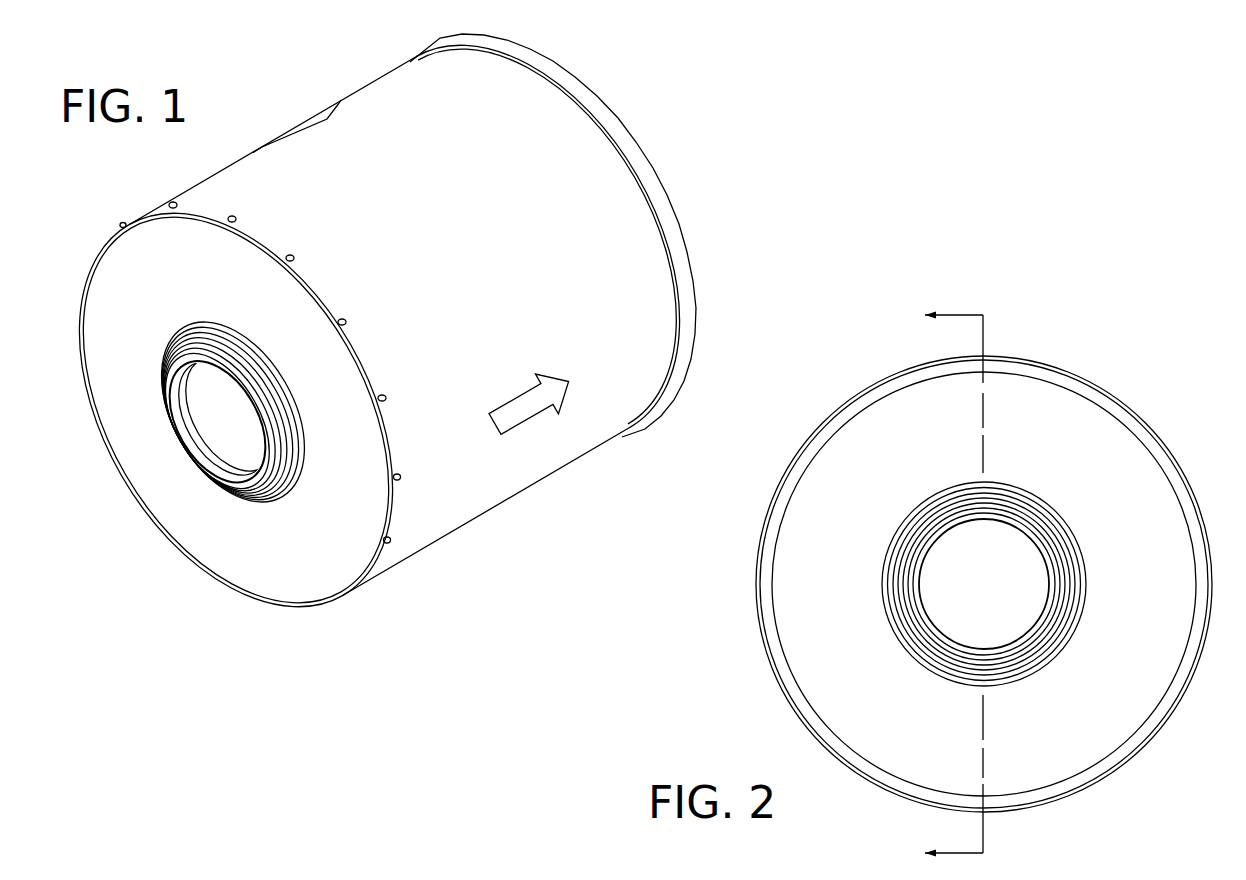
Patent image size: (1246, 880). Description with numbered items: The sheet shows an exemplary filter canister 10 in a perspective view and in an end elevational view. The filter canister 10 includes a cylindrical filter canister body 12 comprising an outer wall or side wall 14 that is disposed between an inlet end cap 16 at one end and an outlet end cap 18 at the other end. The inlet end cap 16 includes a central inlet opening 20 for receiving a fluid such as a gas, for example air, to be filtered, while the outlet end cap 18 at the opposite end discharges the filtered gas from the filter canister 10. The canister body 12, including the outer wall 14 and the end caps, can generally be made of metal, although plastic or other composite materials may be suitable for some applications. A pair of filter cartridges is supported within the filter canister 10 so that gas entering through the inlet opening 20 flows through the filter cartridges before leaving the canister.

In FIG. 1, the filter canister 10 is at (293, 105).
In FIG. 2, the filter canister 10 is at (1065, 326).
In FIG. 1, the filter canister body 12 is at (584, 428).
In FIG. 2, the filter canister body 12 is at (1127, 406).
In FIG. 1, the outer wall 14 is at (459, 250).
In FIG. 1, the inlet end cap 16 is at (193, 527).
In FIG. 2, the inlet end cap 16 is at (1138, 478).
In FIG. 1, the outlet end cap 18 is at (633, 153).
In FIG. 1, the central inlet opening 20 is at (212, 440).
In FIG. 2, the central inlet opening 20 is at (985, 588).